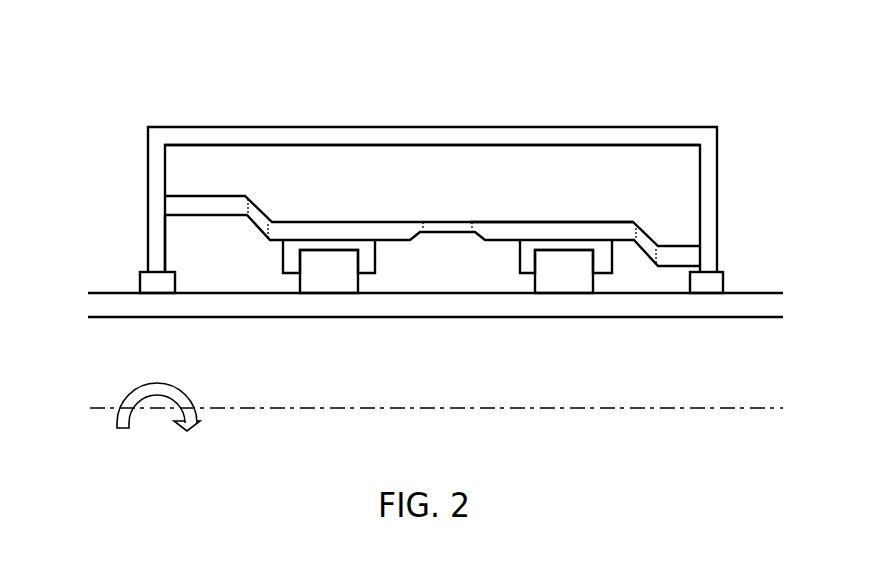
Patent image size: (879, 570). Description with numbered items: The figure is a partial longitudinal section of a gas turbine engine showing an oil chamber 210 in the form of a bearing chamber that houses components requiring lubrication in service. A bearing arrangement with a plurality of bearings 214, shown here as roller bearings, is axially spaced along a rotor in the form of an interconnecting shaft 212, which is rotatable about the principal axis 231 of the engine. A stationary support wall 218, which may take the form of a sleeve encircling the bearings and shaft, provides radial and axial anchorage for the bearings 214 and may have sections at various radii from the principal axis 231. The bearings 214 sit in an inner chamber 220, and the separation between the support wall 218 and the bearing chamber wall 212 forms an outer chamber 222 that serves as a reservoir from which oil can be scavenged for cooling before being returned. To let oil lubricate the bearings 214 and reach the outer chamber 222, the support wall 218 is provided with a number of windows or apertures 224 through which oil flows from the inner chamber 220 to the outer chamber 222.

The oil chamber 210 is at (650, 90).
The interconnecting shaft 212 is at (342, 132).
The bearings 214 is at (552, 282).
The support wall 218 is at (352, 227).
The inner chamber 220 is at (193, 252).
The outer chamber 222 is at (202, 167).
The apertures 224 is at (643, 228).
The principal axis 231 is at (262, 410).